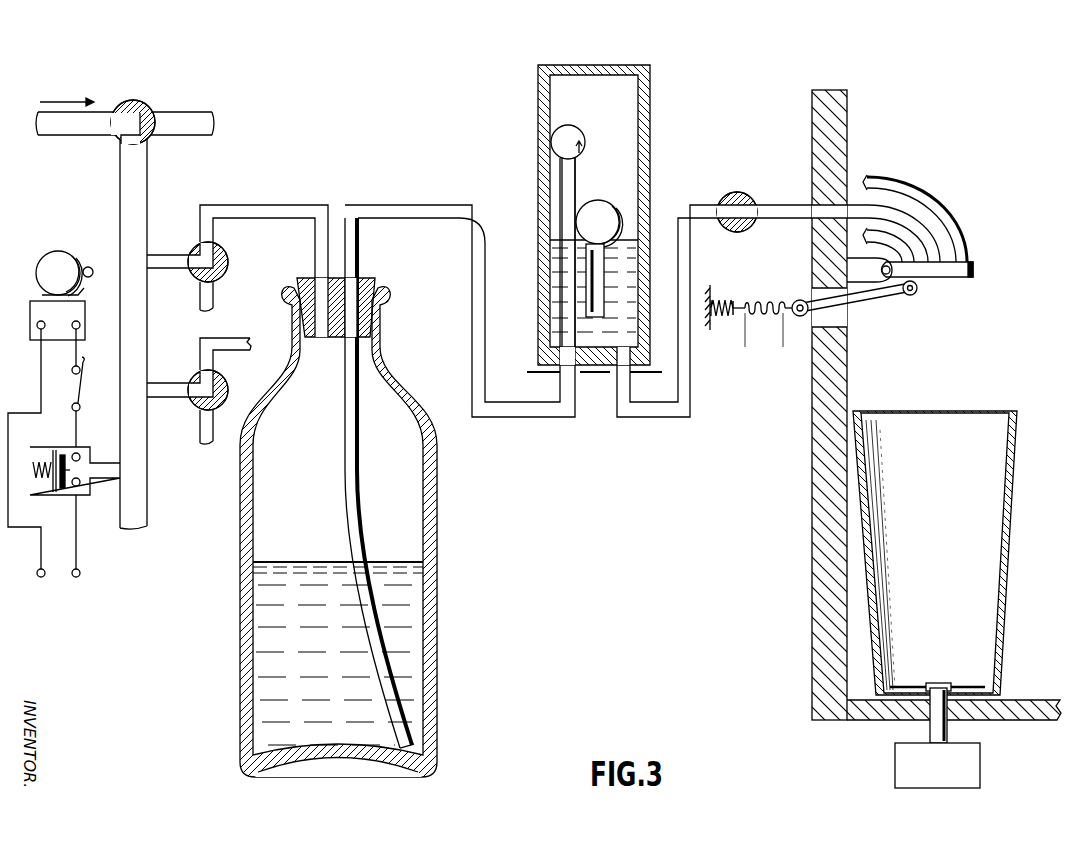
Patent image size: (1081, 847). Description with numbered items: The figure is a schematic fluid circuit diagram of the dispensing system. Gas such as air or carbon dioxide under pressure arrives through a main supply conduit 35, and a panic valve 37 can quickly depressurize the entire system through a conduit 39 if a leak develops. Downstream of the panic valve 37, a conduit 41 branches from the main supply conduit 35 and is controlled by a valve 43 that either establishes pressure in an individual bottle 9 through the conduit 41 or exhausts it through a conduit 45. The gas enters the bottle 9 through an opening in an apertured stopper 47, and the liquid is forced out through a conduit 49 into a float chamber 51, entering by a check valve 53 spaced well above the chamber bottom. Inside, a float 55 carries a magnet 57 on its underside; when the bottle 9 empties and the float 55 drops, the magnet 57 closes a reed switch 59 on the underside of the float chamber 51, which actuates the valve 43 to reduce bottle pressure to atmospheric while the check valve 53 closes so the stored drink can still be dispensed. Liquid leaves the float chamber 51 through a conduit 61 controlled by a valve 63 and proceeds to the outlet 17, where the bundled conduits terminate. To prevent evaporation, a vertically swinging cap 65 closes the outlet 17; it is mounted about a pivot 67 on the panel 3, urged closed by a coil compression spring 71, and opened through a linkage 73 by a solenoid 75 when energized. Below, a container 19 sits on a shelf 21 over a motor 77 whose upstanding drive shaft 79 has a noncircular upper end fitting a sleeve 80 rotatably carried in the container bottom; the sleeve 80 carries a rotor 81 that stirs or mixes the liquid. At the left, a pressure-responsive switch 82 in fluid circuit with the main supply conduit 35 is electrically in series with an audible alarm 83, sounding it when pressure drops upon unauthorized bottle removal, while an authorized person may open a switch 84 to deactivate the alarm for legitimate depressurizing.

The panel 3 is at (815, 177).
The bottle 9 is at (437, 489).
The outlet 17 is at (962, 220).
The container 19 is at (1010, 500).
The shelf 21 is at (1030, 700).
The main supply conduit 35 is at (121, 157).
The panic valve 37 is at (139, 104).
The conduit 39 is at (181, 131).
The conduit 41 is at (170, 270).
The valve 43 is at (227, 254).
The conduit 45 is at (214, 295).
The apertured stopper 47 is at (366, 278).
The conduit 49 is at (356, 470).
The float chamber 51 is at (540, 193).
The check valve 53 is at (586, 142).
The float 55 is at (600, 206).
The magnet 57 is at (605, 290).
The reed switch 59 is at (598, 375).
The conduit 61 is at (692, 380).
The valve 63 is at (743, 194).
The cap 65 is at (975, 270).
The pivot 67 is at (884, 264).
The coil compression spring 71 is at (724, 319).
The linkage 73 is at (869, 300).
The solenoid 75 is at (769, 302).
The motor 77 is at (982, 757).
The drive shaft 79 is at (933, 727).
The sleeve 80 is at (952, 683).
The rotor 81 is at (963, 685).
The pressure-responsive switch 82 is at (86, 497).
The audible alarm 83 is at (50, 258).
The switch 84 is at (82, 386).